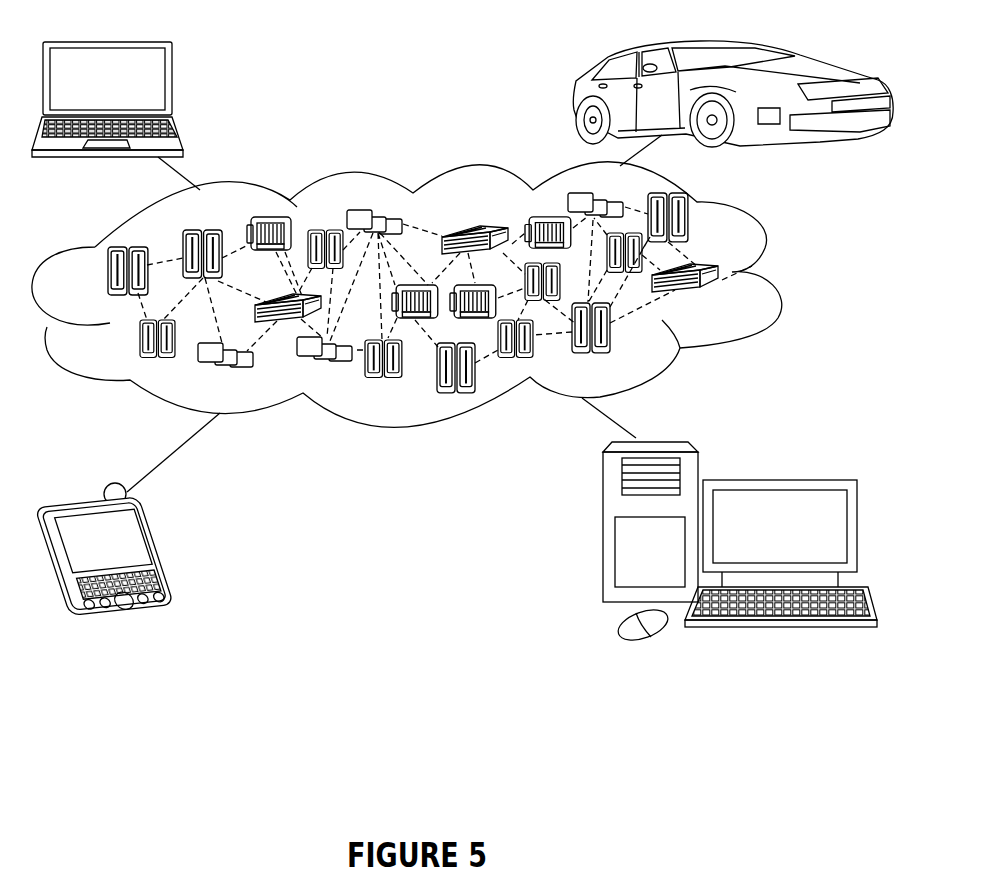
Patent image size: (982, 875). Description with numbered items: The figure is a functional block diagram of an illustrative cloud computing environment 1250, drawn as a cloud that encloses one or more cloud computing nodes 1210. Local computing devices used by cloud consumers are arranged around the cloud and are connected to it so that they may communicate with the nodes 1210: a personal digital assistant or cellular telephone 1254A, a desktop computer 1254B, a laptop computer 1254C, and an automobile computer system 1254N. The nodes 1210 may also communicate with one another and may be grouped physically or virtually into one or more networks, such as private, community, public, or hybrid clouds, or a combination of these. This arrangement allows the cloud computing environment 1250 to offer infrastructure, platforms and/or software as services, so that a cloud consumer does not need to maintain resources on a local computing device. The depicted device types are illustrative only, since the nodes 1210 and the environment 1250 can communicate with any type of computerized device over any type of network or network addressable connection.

The cloud computing environment 1250 is at (438, 295).
The cloud computing nodes 1210 is at (727, 298).
The personal digital assistant (PDA) or cellular telephone 1254A is at (162, 548).
The desktop computer 1254B is at (790, 465).
The laptop computer 1254C is at (171, 86).
The automobile computer system 1254N is at (573, 98).